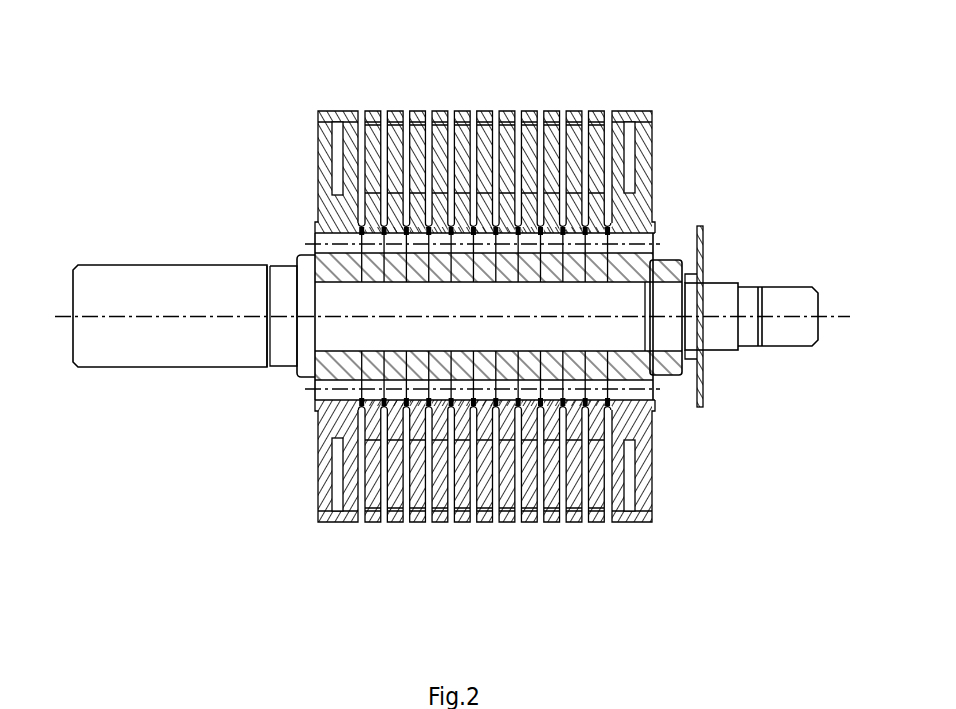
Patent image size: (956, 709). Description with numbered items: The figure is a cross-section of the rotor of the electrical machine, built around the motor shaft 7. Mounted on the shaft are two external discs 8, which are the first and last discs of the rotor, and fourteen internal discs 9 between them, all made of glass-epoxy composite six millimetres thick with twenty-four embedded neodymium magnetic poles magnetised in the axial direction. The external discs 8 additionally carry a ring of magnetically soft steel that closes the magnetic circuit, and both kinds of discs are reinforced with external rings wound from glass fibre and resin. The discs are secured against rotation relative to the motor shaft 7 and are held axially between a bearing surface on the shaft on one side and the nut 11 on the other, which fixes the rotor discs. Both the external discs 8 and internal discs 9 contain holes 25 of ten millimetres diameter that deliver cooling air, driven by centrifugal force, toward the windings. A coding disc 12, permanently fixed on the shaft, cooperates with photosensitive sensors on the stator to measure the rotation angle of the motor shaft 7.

The motor shaft 7 is at (708, 300).
The external disc 8 is at (326, 160).
The internal disc 9 is at (438, 153).
The nut 11 is at (660, 268).
The coding disc 12 is at (700, 277).
The holes 25 is at (640, 383).